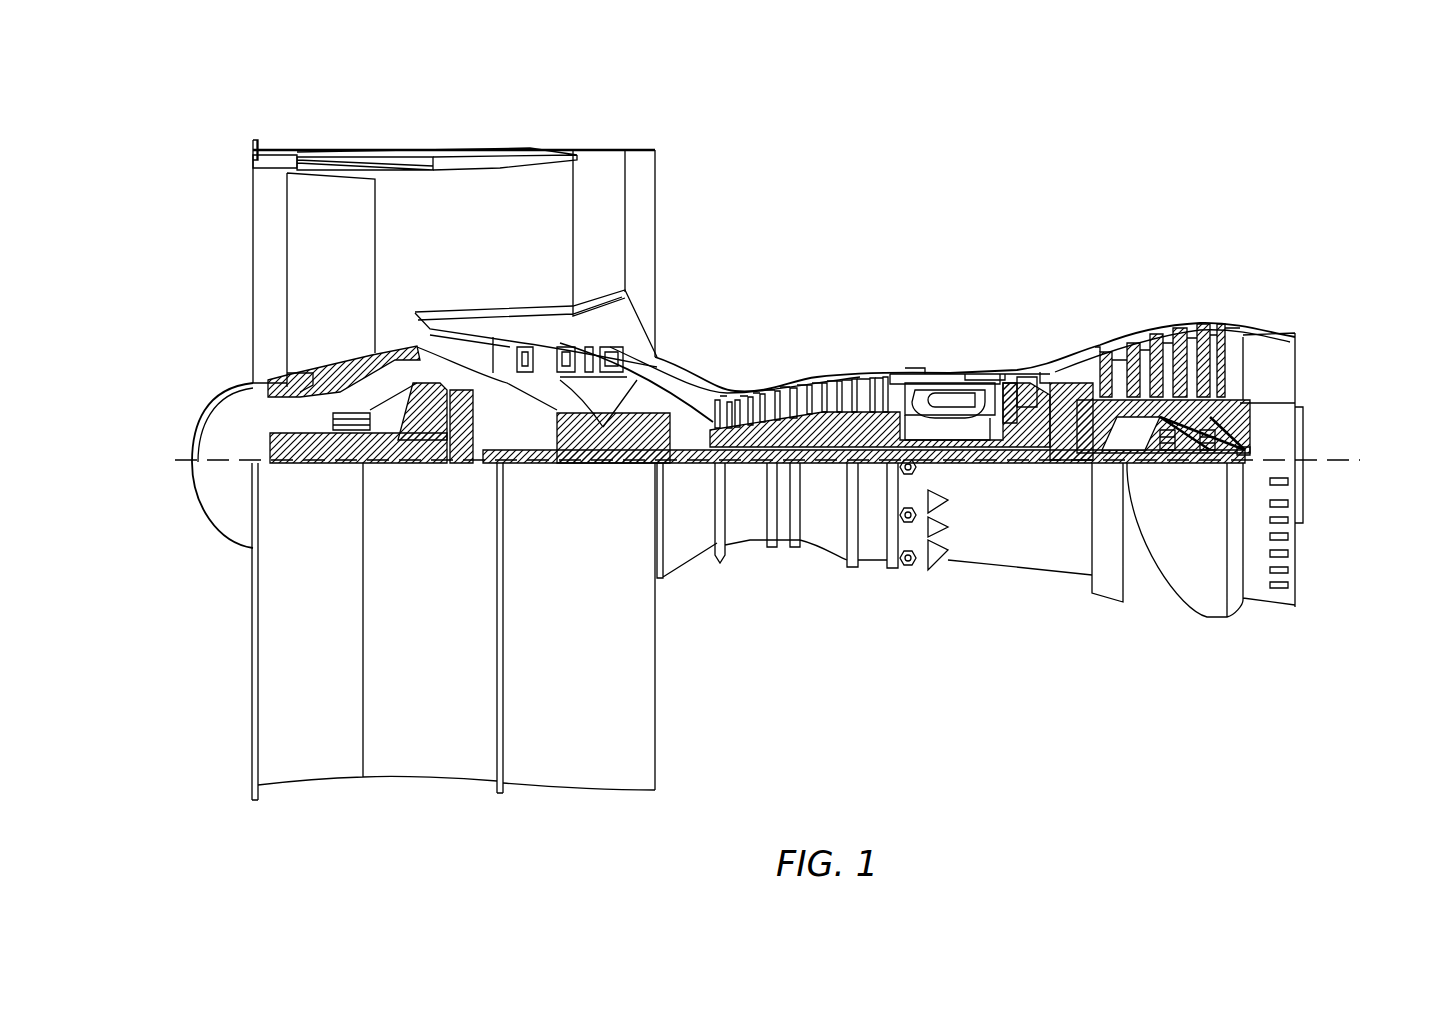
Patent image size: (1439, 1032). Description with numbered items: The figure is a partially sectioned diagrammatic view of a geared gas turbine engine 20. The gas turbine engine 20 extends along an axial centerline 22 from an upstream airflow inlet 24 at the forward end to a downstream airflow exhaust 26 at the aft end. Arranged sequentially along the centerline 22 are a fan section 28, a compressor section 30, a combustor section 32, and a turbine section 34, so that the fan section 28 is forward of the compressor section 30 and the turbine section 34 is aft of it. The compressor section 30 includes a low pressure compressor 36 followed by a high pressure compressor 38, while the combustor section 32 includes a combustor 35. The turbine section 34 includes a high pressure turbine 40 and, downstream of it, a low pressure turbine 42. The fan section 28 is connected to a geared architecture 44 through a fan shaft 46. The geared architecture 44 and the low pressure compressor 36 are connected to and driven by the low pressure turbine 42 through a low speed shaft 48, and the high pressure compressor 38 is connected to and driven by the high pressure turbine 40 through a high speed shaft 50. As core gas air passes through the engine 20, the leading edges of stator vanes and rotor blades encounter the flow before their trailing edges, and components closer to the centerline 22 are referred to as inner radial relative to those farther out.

The gas turbine engine 20 is at (957, 153).
The axial centerline 22 is at (1350, 462).
The upstream airflow inlet 24 is at (190, 230).
The downstream airflow exhaust 26 is at (1318, 359).
The fan section 28 is at (422, 130).
The compressor section 30 is at (517, 258).
The combustor section 32 is at (957, 369).
The turbine section 34 is at (1000, 237).
The combustor 35 is at (950, 405).
The low pressure compressor 36 is at (622, 335).
The high pressure compressor 38 is at (802, 373).
The high pressure turbine 40 is at (1029, 367).
The low pressure turbine 42 is at (1190, 318).
The geared architecture 44 is at (463, 450).
The fan shaft 46 is at (335, 457).
The low speed shaft 48 is at (1015, 462).
The high speed shaft 50 is at (823, 470).